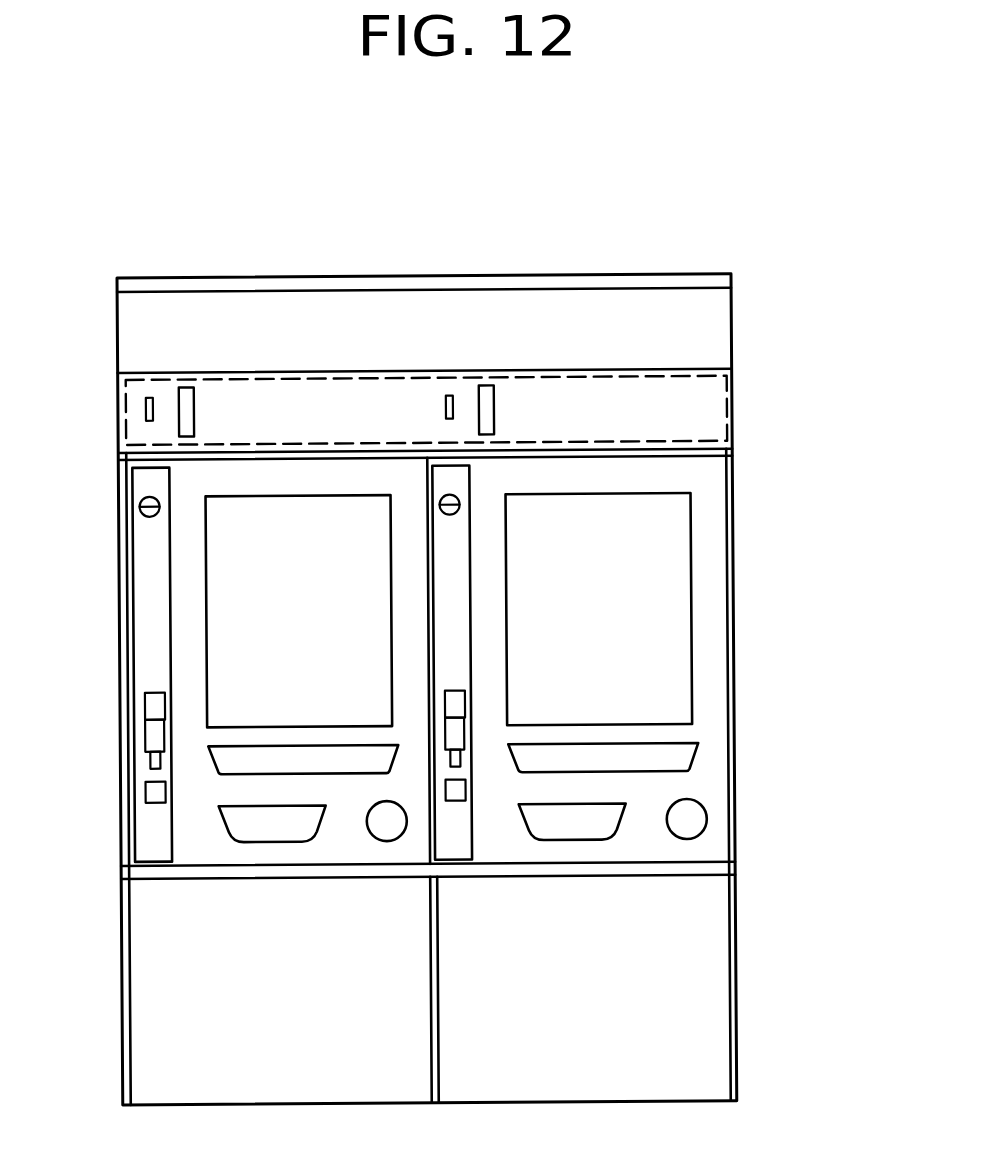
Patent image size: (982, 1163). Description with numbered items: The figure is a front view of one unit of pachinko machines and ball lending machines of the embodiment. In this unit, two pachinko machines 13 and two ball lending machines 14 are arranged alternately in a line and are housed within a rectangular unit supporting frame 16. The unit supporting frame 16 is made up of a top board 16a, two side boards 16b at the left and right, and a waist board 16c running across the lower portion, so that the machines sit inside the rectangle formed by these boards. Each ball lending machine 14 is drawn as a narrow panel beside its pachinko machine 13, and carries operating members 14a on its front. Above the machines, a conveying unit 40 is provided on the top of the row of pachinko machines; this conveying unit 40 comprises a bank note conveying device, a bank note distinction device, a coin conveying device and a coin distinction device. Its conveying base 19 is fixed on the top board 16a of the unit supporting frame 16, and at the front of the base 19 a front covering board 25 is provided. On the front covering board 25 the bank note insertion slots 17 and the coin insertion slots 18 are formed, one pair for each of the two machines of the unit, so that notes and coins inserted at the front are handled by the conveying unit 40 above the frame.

The conveying unit 40 is at (112, 330).
The unit supporting frame 16 is at (733, 705).
The top board 16a is at (697, 457).
The side board 16b is at (120, 647).
The waist board 16c is at (678, 870).
The conveying base 19 is at (728, 417).
The front covering board 25 is at (330, 397).
The coin insertion slot 18 is at (148, 398).
The bank note insertion slot 17 is at (186, 388).
The ball lending machine 14 is at (153, 863).
The operation buttons 14a is at (147, 770).
The pachinko machine 13 is at (343, 850).